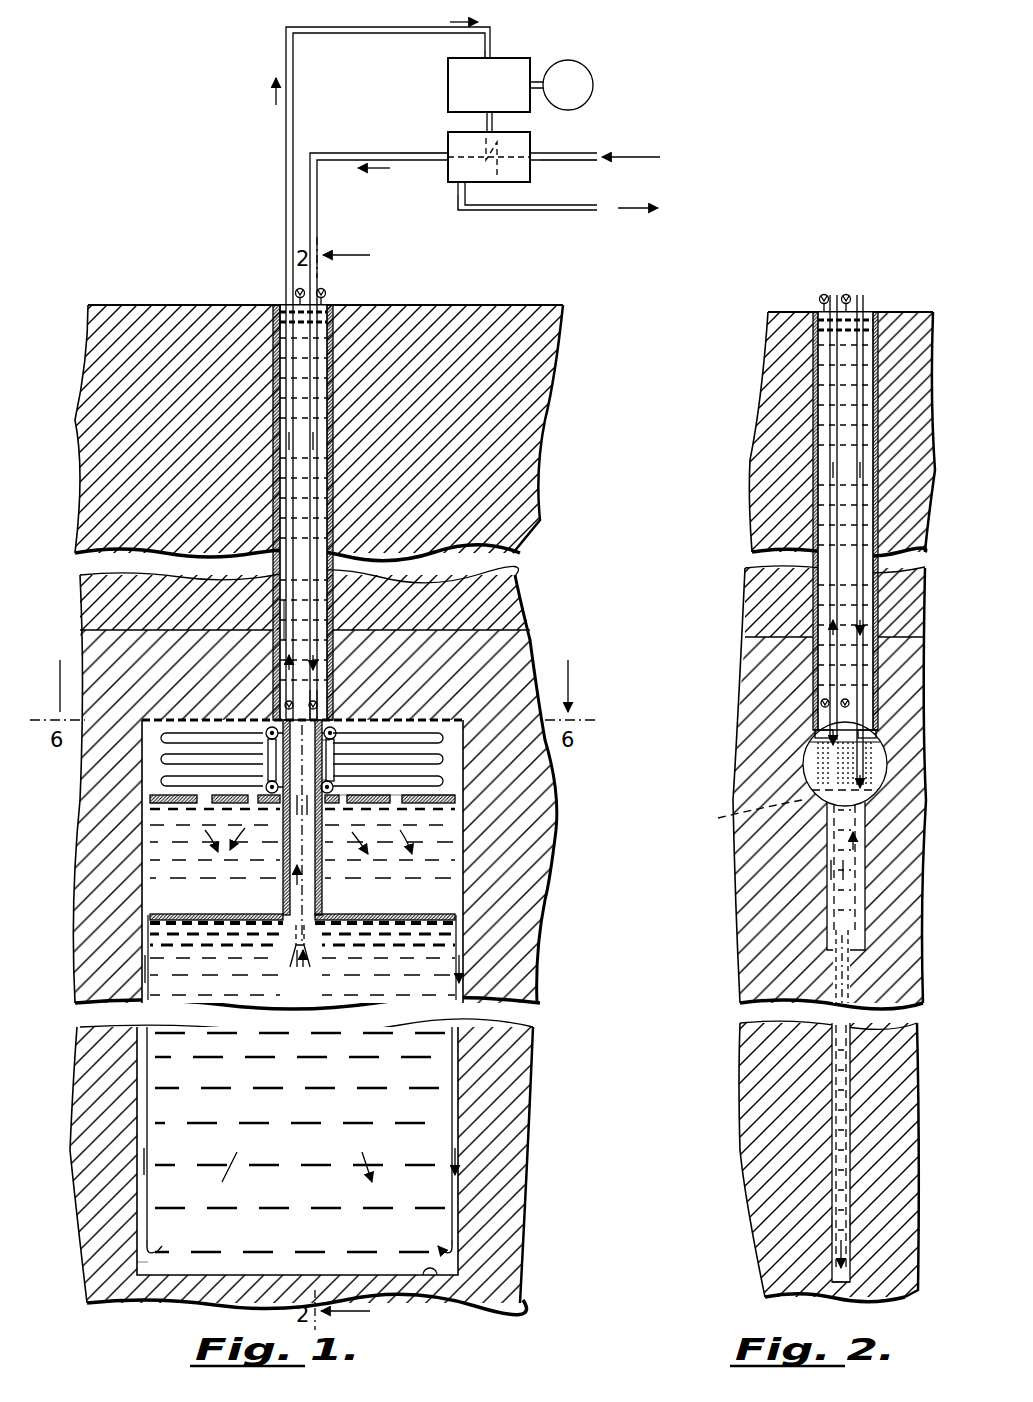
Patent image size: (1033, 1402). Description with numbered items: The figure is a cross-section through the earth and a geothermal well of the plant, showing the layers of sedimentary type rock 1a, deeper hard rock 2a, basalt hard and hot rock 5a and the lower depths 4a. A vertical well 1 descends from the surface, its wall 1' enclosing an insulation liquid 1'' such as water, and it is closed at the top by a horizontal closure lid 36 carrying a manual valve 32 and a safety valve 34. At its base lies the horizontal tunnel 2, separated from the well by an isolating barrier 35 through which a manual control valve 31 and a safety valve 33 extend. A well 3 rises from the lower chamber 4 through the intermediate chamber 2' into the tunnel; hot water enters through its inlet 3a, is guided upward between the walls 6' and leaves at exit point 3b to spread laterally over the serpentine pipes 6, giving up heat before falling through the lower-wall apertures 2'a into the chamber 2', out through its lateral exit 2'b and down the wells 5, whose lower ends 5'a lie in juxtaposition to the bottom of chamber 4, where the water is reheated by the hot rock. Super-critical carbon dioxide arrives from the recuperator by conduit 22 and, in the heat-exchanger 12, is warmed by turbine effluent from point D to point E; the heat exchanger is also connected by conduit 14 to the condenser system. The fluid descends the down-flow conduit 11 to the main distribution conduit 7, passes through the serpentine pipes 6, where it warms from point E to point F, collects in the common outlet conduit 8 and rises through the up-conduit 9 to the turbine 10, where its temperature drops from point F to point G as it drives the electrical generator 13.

In FIG. 1, the well 1 is at (416, 512).
In FIG. 2, the well 1 is at (845, 521).
In FIG. 1, the wall 1' is at (422, 512).
In FIG. 2, the wall 1' is at (888, 521).
In FIG. 1, the insulation liquid 1'' is at (359, 310).
In FIG. 1, the sedimentary type rock 1a is at (512, 528).
In FIG. 2, the sedimentary type rock 1a is at (905, 515).
In FIG. 1, the tunnel 2 is at (249, 861).
In FIG. 1, the hard rock 2a is at (510, 646).
In FIG. 2, the hard rock 2a is at (900, 820).
In FIG. 1, the intermediate chamber 2' is at (369, 867).
In FIG. 1, the lower-wall apertures 2'a is at (375, 810).
In FIG. 1, the lateral exit 2'b is at (373, 943).
In FIG. 1, the well 3 is at (322, 875).
In FIG. 2, the well 3 is at (866, 890).
In FIG. 1, the inlet 3a is at (312, 972).
In FIG. 2, the inlet 3a is at (852, 940).
In FIG. 1, the exit point 3b is at (334, 787).
In FIG. 2, the exit point 3b is at (882, 762).
In FIG. 1, the chamber 4 is at (379, 1081).
In FIG. 2, the chamber 4 is at (850, 1110).
In FIG. 1, the lower depths 4a is at (437, 1272).
In FIG. 2, the lower depths 4a is at (895, 1290).
In FIG. 1, the wells 5 is at (306, 1140).
In FIG. 2, the wells 5 is at (889, 1228).
In FIG. 1, the basalt hard and hot rock 5a is at (510, 1128).
In FIG. 2, the basalt hard and hot rock 5a is at (885, 1175).
In FIG. 1, the liner lower end 5'a is at (313, 1215).
In FIG. 1, the serpentine pipes 6 is at (240, 710).
In FIG. 1, the walls 6' is at (221, 848).
In FIG. 2, the walls 6' is at (884, 775).
In FIG. 1, the main distribution conduit 7 is at (278, 830).
In FIG. 2, the main distribution conduit 7 is at (749, 815).
In FIG. 1, the common outlet conduit 8 is at (268, 727).
In FIG. 2, the common outlet conduit 8 is at (876, 735).
In FIG. 1, the up-conduit 9 is at (360, 28).
In FIG. 2, the up-conduit 9 is at (830, 382).
In FIG. 1, the turbine 10 is at (530, 65).
In FIG. 1, the down-flow conduit 11 is at (345, 155).
In FIG. 2, the down-flow conduit 11 is at (865, 415).
In FIG. 1, the heat-exchanger 12 is at (448, 140).
In FIG. 1, the electrical generator 13 is at (593, 76).
In FIG. 1, the conduit 14 is at (570, 212).
In FIG. 1, the conduit 22 is at (575, 152).
In FIG. 1, the manual control valve 31 is at (316, 700).
In FIG. 1, the manual valve 32 is at (326, 293).
In FIG. 2, the manual valve 32 is at (820, 297).
In FIG. 1, the safety valve 33 is at (318, 710).
In FIG. 1, the safety valve 34 is at (296, 290).
In FIG. 2, the safety valve 34 is at (848, 295).
In FIG. 1, the isolating barrier 35 is at (285, 700).
In FIG. 2, the isolating barrier 35 is at (850, 700).
In FIG. 1, the horizontal closure lid 36 is at (273, 305).
In FIG. 2, the horizontal closure lid 36 is at (876, 310).
In FIG. 1, the point G is at (494, 122).
In FIG. 1, the point E is at (415, 162).
In FIG. 1, the point D is at (545, 162).
In FIG. 1, the point F is at (283, 588).